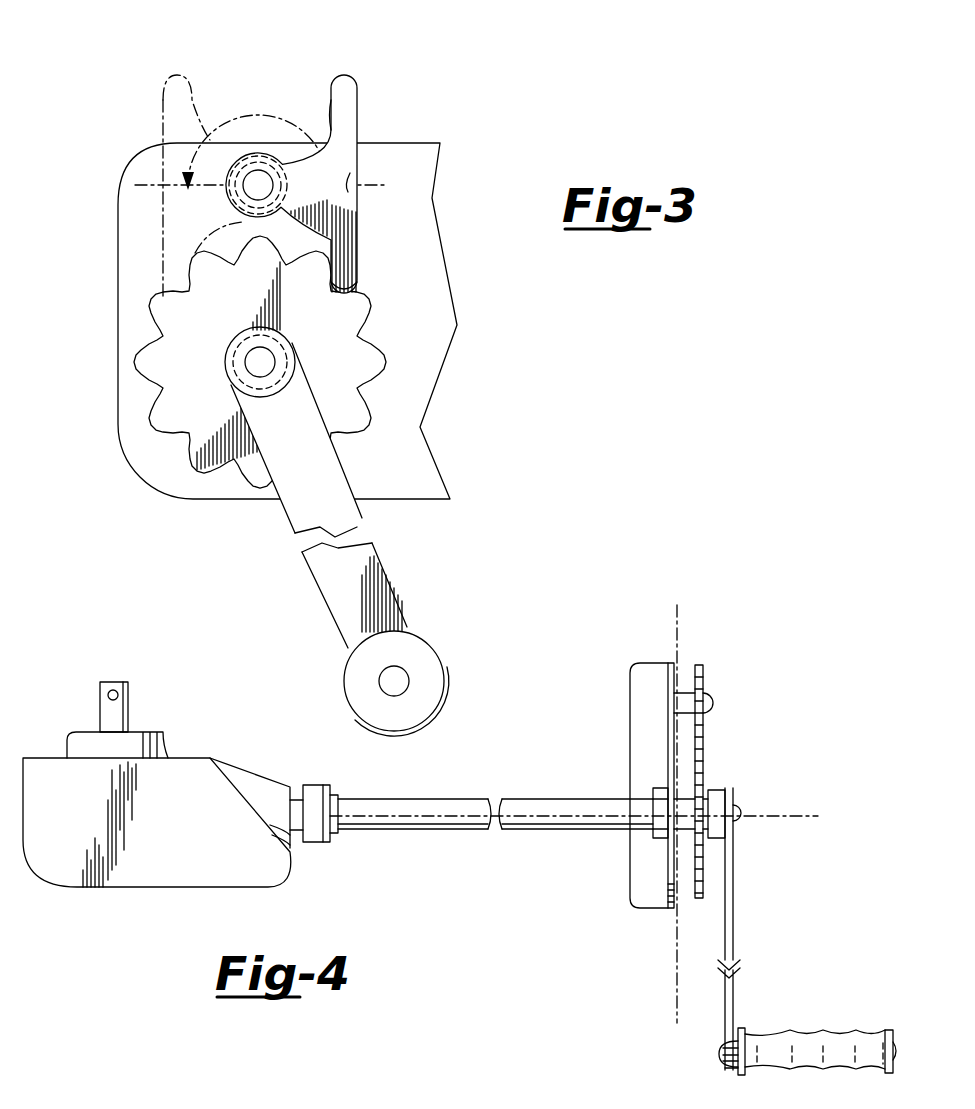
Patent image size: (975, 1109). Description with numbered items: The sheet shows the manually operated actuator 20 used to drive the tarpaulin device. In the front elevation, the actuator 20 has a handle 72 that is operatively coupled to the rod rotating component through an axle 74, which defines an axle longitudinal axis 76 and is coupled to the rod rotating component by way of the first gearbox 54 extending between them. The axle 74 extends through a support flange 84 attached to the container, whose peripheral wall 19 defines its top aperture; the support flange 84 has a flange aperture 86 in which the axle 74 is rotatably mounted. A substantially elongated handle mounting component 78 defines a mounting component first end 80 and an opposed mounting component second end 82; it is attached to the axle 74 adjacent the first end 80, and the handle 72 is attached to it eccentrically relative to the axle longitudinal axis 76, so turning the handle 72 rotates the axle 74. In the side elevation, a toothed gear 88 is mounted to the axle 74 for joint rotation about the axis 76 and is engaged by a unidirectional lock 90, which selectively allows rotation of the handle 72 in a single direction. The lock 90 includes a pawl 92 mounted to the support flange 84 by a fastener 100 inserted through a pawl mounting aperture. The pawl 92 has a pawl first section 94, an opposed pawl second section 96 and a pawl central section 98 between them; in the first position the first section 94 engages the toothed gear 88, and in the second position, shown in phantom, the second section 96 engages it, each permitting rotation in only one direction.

In FIG. 4, the peripheral wall 19 is at (685, 628).
In FIG. 4, the actuator 20 is at (526, 888).
In FIG. 4, the first gearbox 54 is at (207, 898).
In FIG. 3, the handle 72 is at (425, 660).
In FIG. 4, the handle 72 is at (772, 1037).
In FIG. 4, the axle 74 is at (432, 800).
In FIG. 4, the axle longitudinal axis 76 is at (806, 814).
In FIG. 3, the handle mounting component 78 is at (350, 525).
In FIG. 4, the handle mounting component 78 is at (737, 897).
In FIG. 4, the mounting component first end 80 is at (728, 790).
In FIG. 4, the mounting component second end 82 is at (727, 1073).
In FIG. 3, the support flange 84 is at (437, 337).
In FIG. 4, the support flange 84 is at (668, 683).
In FIG. 4, the flange aperture 86 is at (633, 847).
In FIG. 3, the toothed gear 88 is at (337, 407).
In FIG. 4, the toothed gear 88 is at (700, 665).
In FIG. 3, the unidirectional lock 90 is at (452, 295).
In FIG. 3, the pawl 92 is at (379, 126).
In FIG. 3, the pawl first section 94 is at (357, 240).
In FIG. 3, the pawl second section 96 is at (345, 82).
In FIG. 3, the pawl central section 98 is at (350, 173).
In FIG. 3, the fastener 100 is at (253, 180).